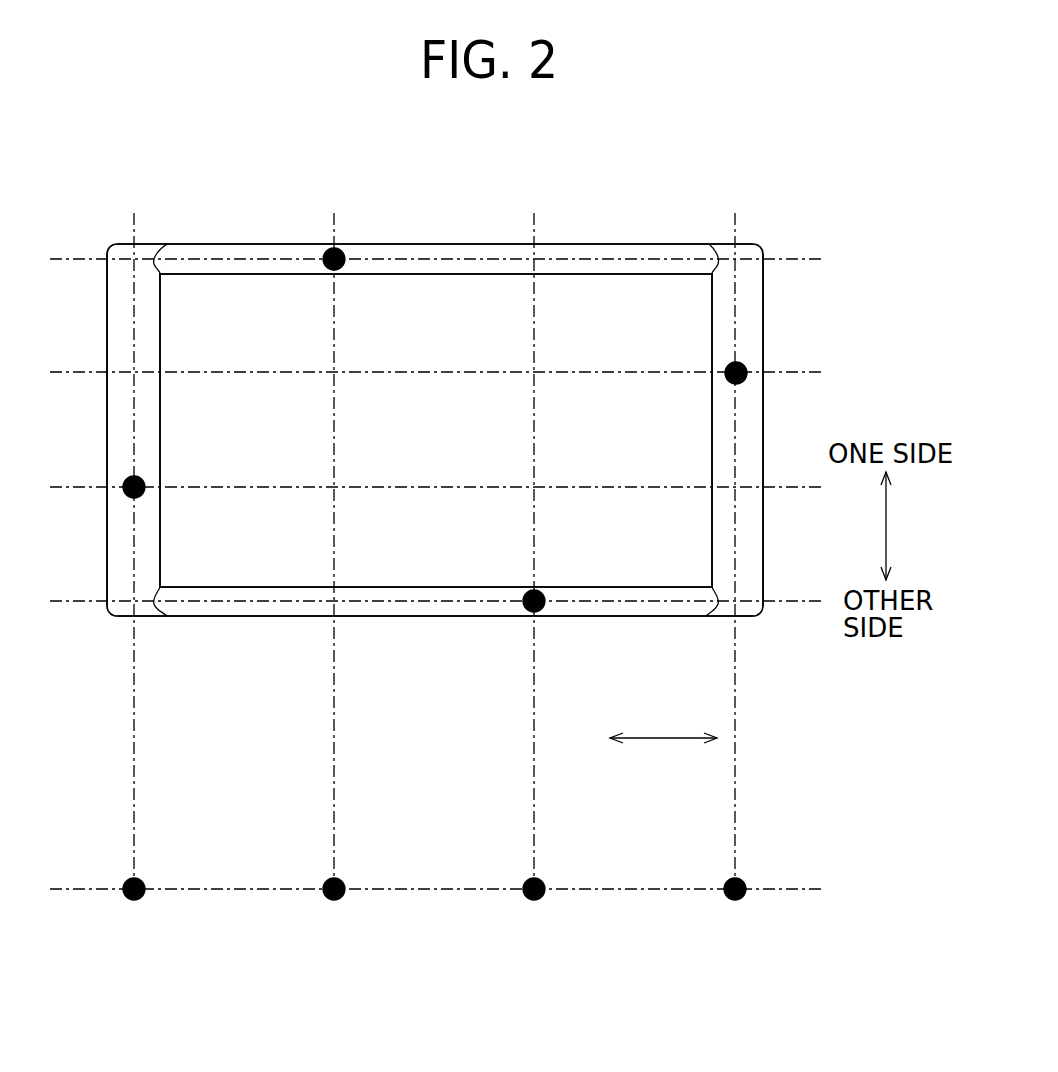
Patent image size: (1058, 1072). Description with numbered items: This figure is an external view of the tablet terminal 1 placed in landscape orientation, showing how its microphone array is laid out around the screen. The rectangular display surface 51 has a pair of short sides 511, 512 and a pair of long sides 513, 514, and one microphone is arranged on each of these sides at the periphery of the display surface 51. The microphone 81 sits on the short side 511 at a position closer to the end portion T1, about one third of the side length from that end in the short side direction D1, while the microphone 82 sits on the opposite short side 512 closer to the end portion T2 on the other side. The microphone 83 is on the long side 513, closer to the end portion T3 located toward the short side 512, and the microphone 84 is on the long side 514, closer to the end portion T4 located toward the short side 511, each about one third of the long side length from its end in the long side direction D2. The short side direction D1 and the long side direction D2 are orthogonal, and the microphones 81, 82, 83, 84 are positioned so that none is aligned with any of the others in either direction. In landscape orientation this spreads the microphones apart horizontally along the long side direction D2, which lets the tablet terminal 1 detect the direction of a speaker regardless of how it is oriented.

The tablet terminal 1 is at (740, 158).
The display surface 51 is at (455, 315).
The short side 511 is at (712, 425).
The short side 512 is at (160, 323).
The long side 513 is at (586, 275).
The long side 514 is at (414, 587).
The microphone 81 is at (744, 367).
The microphone 82 is at (127, 479).
The microphone 83 is at (339, 248).
The microphone 84 is at (544, 608).
The end portion T1 is at (709, 244).
The end portion T2 is at (167, 616).
The end portion T3 is at (167, 244).
The end portion T4 is at (706, 616).
The short side direction D1 is at (887, 531).
The long side direction D2 is at (665, 737).